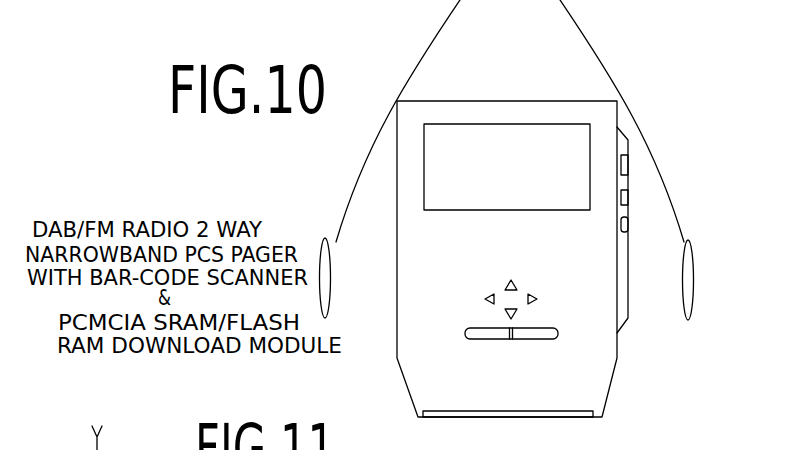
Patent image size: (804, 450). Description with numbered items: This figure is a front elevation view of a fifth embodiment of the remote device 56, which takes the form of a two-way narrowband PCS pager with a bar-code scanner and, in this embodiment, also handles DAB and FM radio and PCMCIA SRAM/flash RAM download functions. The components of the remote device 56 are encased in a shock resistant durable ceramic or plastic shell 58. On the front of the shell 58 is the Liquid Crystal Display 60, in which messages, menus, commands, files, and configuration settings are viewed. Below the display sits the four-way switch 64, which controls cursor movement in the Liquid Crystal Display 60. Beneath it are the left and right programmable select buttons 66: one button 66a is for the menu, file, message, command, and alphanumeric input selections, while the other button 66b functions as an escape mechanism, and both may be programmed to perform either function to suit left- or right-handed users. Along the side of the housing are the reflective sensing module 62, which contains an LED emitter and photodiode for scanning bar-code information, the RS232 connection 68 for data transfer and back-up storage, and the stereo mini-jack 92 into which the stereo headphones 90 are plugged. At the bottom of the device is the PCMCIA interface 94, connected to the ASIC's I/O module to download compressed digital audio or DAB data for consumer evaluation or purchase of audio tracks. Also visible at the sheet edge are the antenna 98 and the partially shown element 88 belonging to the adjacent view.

In FIG. 10, the remote device 56 is at (576, 91).
In FIG. 10, the shell 58 is at (468, 63).
In FIG. 10, the Liquid Crystal Display 60 is at (529, 145).
In FIG. 10, the reflective sensing module 62 is at (626, 166).
In FIG. 10, the four-way switch 64 is at (486, 300).
In FIG. 10, the programmable select buttons 66 is at (465, 335).
In FIG. 10, the button 66a is at (493, 377).
In FIG. 10, the button 66b is at (558, 334).
In FIG. 10, the RS232 connection 68 is at (628, 198).
In FIG. 10, the stereo headphones 90 is at (757, 257).
In FIG. 10, the stereo mini-jack 92 is at (628, 224).
In FIG. 10, the PCMCIA interface 94 is at (545, 417).
In FIG. 11, the antenna 98 is at (75, 449).
In FIG. 11, the pager device 88 is at (789, 442).